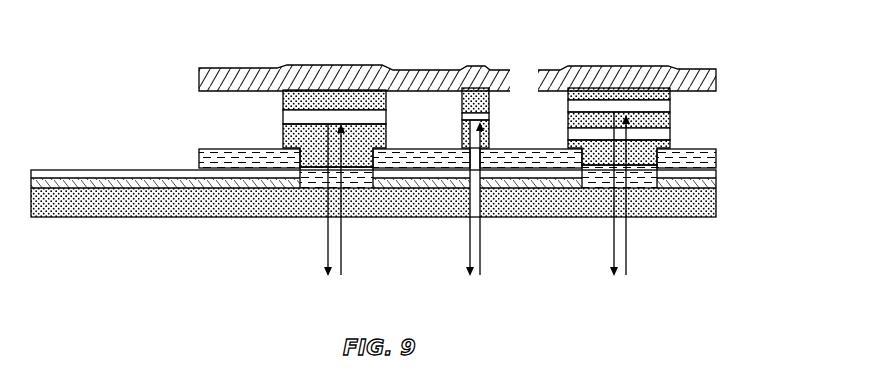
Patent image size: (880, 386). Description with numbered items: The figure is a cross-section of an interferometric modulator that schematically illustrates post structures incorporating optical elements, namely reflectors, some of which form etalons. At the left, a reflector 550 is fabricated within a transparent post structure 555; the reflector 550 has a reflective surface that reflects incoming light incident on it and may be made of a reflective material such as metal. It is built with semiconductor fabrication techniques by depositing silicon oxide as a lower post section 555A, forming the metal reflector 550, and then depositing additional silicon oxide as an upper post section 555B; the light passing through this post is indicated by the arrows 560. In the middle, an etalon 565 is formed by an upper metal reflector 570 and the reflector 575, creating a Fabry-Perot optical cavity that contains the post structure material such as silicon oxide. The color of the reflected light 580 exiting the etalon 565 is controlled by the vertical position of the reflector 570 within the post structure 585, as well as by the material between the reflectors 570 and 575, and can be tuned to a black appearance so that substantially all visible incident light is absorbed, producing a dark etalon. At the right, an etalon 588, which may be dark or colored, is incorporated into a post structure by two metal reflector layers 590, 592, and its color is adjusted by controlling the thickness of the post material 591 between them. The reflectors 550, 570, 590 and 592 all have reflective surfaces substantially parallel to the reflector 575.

The reflector 550 is at (255, 128).
The transparent post structure 555 is at (448, 92).
The lower post section 555A is at (283, 141).
The upper post section 555B is at (283, 95).
The heat flow direction 560 is at (334, 214).
The etalon 565 is at (492, 160).
The upper metal reflector 570 is at (486, 110).
The reflector 575 is at (554, 182).
The reflected light 580 is at (475, 212).
The post structure 585 is at (447, 118).
The etalon 588 is at (640, 126).
The metal reflector layer 590 is at (672, 107).
The post material 591 is at (672, 123).
The metal reflector layer 592 is at (672, 135).